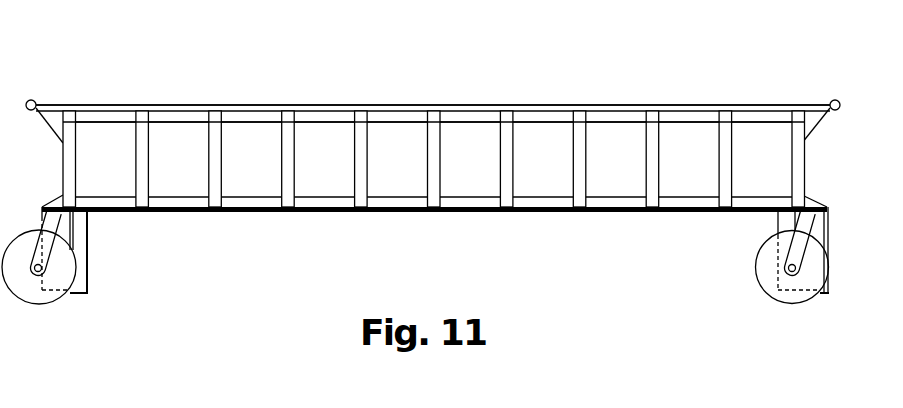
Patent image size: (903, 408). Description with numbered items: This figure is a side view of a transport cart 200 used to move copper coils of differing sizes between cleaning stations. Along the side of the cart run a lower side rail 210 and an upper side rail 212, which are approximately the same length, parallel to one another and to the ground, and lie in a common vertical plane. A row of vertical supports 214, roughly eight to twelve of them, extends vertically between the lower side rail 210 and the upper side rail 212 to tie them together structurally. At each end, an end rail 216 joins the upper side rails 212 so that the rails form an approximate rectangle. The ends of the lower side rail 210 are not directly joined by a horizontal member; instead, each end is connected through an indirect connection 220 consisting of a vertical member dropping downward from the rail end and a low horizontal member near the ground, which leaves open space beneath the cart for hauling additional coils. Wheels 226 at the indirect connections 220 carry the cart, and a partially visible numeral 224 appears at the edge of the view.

The transport cart 200 is at (636, 298).
The lower side rail 210 is at (243, 198).
The upper side rail 212 is at (192, 117).
The vertical supports 214 is at (362, 163).
The end rails 216 is at (31, 100).
The indirect connection 220 is at (90, 242).
The lower support 224 is at (6, 193).
The wheels 226 is at (28, 290).